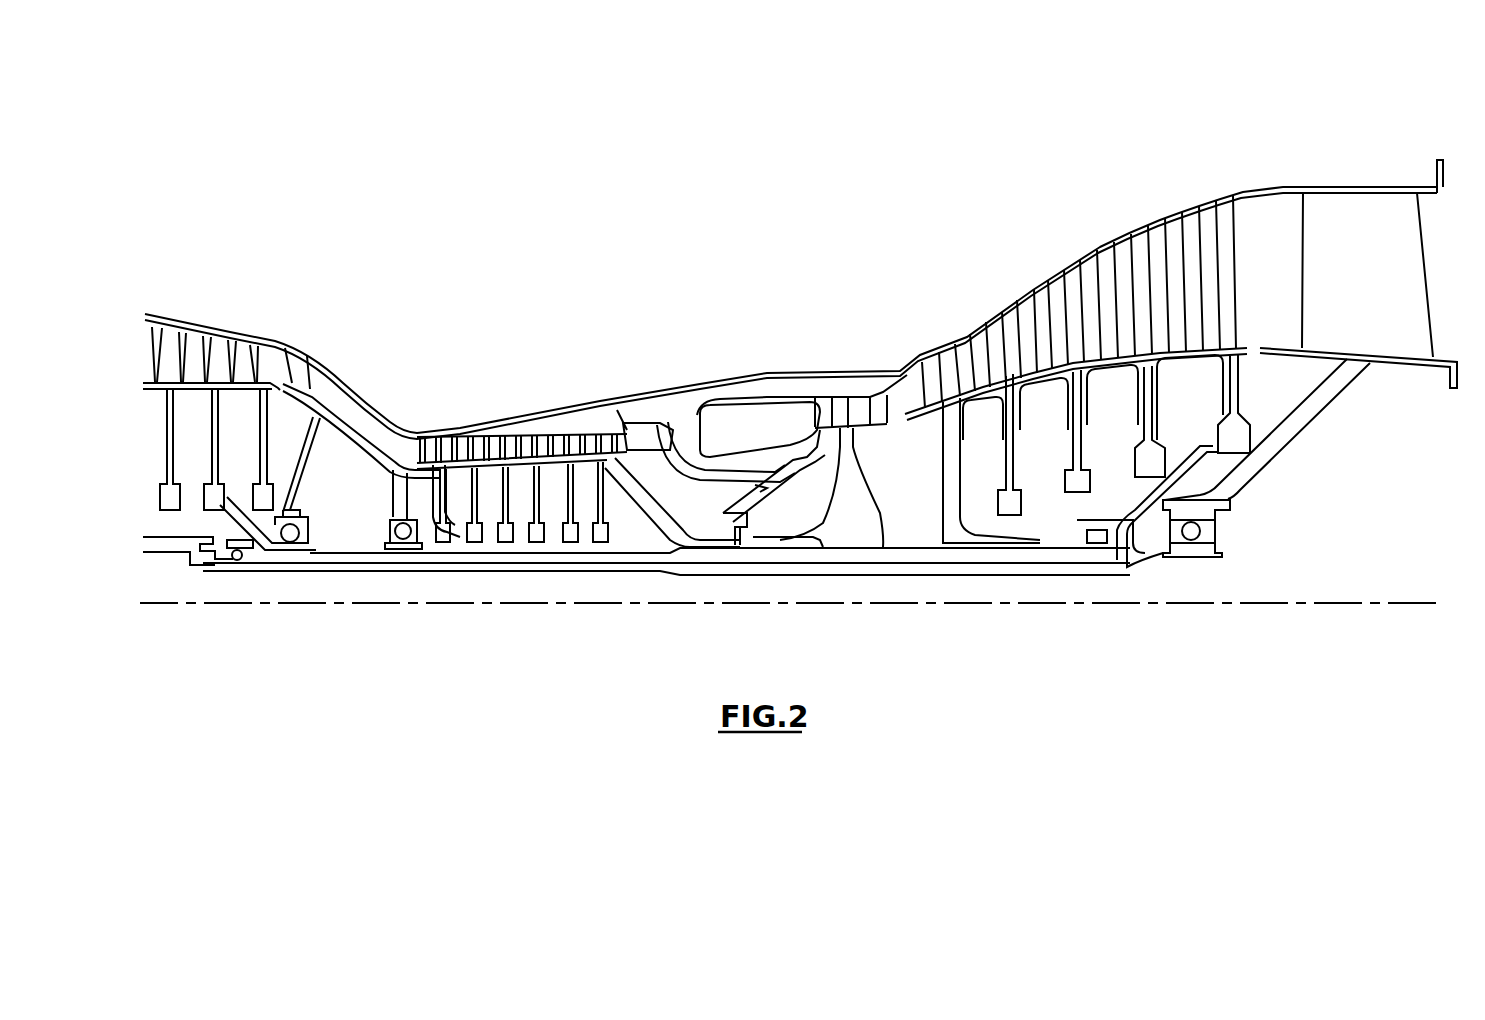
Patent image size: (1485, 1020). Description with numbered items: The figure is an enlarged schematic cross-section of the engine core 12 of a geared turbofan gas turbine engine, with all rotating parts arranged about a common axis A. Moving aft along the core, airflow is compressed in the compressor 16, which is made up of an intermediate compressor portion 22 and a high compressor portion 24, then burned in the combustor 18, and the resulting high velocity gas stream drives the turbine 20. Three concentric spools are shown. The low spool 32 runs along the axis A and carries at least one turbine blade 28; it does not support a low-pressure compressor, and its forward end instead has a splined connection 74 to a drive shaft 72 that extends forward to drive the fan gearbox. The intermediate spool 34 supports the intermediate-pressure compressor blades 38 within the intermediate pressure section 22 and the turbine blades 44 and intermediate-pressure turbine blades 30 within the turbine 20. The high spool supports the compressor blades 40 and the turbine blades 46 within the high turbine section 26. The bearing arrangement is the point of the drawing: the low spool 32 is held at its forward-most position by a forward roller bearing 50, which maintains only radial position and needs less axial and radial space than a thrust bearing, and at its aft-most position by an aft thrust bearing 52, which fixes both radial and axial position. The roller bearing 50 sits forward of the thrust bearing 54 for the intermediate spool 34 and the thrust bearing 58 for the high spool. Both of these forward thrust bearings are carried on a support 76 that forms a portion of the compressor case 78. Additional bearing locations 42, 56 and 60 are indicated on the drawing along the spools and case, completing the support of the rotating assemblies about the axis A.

The core section 12 is at (915, 58).
The compressor 16 is at (622, 232).
The combustor 18 is at (826, 343).
The turbine 20 is at (833, 347).
The intermediate compressor portion 22 is at (378, 262).
The high compressor portion 24 is at (637, 343).
The high turbine section 26 is at (933, 323).
The turbine blade 28 is at (1283, 145).
The intermediate-pressure turbine blades 30 is at (1043, 262).
The low spool 32 is at (297, 570).
The intermediate spool 34 is at (610, 565).
The intermediate-pressure compressor blades 38 is at (280, 404).
The compressor blades 40 is at (595, 388).
The low pressure turbine rotor 42 is at (1250, 379).
The turbine blades 44 is at (1037, 407).
The turbine blades 46 is at (853, 447).
The forward roller bearing 50 is at (233, 578).
The aft thrust bearing 52 is at (1167, 570).
The thrust bearing 54 is at (321, 548).
The bearing 56 is at (1063, 543).
The thrust bearing 58 is at (413, 565).
The bearing 60 is at (737, 558).
The drive shaft 72 is at (150, 548).
The splined connection 74 is at (180, 545).
The support 76 is at (230, 500).
The compressor case 78 is at (191, 323).
The axis A is at (1440, 603).